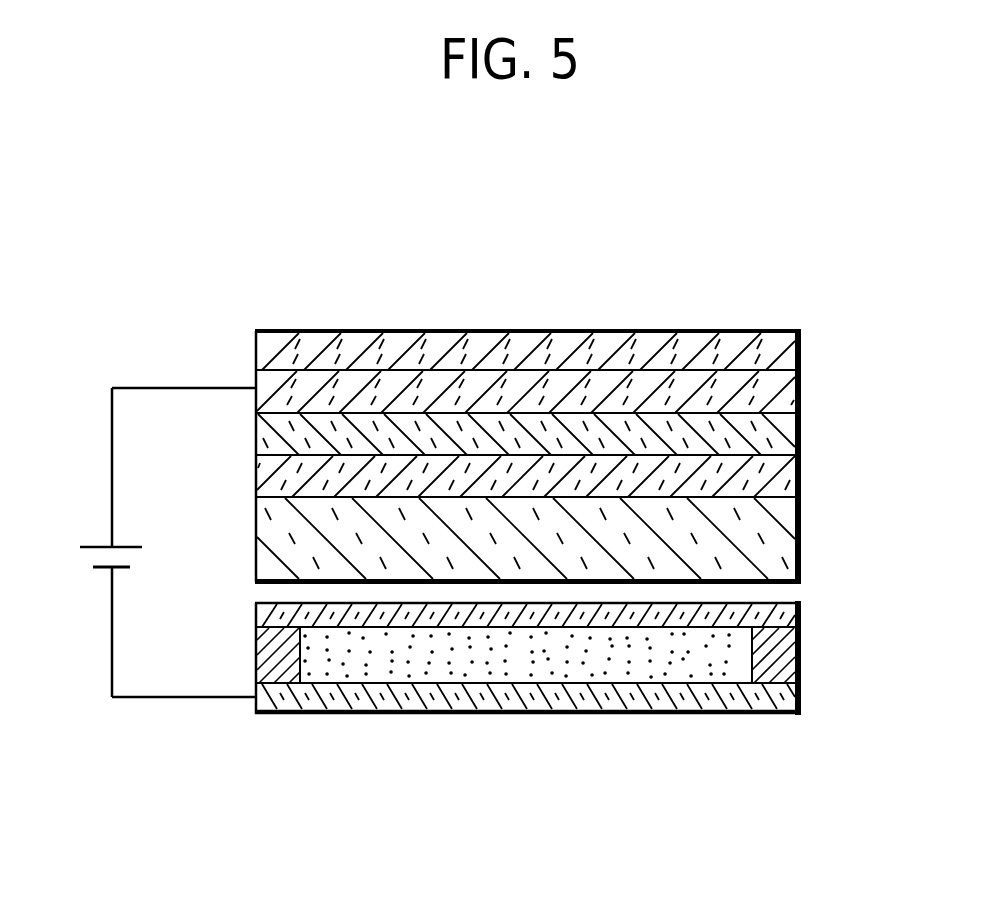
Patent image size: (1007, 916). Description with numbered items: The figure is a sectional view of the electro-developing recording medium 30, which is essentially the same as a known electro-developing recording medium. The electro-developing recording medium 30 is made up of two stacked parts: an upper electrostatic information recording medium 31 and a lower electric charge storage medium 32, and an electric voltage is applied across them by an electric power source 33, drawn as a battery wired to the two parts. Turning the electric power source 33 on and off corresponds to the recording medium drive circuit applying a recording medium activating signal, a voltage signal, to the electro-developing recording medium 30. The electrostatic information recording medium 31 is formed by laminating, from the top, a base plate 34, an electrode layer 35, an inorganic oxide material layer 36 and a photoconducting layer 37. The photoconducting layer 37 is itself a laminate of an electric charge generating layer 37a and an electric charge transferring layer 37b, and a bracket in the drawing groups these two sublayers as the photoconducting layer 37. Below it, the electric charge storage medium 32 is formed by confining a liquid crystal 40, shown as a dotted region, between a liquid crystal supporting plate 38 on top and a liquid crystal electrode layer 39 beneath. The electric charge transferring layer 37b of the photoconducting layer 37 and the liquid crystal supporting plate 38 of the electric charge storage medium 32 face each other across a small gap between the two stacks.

The electro-developing recording medium 30 is at (178, 700).
The electrostatic information recording medium 31 is at (368, 329).
The electric charge storage medium 32 is at (392, 714).
The electric power source 33 is at (93, 546).
The base plate 34 is at (667, 340).
The electrode layer 35 is at (803, 381).
The inorganic oxide material layer 36 is at (790, 435).
The photoconducting layer 37 is at (803, 455).
The electric charge generating layer 37a is at (255, 471).
The electric charge transferring layer 37b is at (255, 539).
The liquid crystal supporting plate 38 is at (803, 612).
The liquid crystal electrode layer 39 is at (638, 714).
The liquid crystal 40 is at (547, 655).